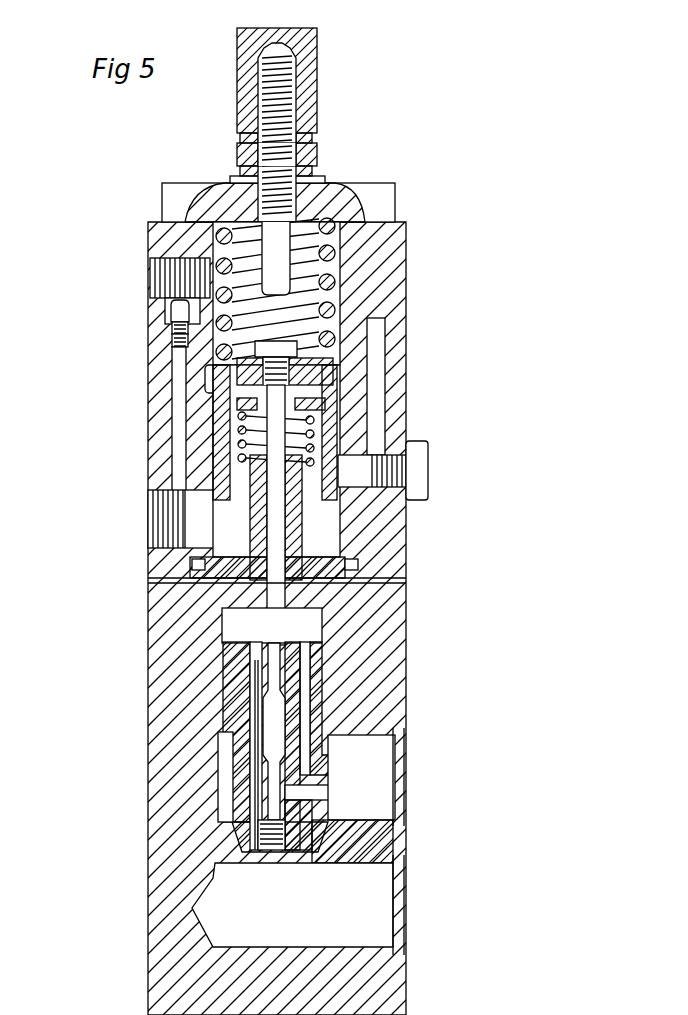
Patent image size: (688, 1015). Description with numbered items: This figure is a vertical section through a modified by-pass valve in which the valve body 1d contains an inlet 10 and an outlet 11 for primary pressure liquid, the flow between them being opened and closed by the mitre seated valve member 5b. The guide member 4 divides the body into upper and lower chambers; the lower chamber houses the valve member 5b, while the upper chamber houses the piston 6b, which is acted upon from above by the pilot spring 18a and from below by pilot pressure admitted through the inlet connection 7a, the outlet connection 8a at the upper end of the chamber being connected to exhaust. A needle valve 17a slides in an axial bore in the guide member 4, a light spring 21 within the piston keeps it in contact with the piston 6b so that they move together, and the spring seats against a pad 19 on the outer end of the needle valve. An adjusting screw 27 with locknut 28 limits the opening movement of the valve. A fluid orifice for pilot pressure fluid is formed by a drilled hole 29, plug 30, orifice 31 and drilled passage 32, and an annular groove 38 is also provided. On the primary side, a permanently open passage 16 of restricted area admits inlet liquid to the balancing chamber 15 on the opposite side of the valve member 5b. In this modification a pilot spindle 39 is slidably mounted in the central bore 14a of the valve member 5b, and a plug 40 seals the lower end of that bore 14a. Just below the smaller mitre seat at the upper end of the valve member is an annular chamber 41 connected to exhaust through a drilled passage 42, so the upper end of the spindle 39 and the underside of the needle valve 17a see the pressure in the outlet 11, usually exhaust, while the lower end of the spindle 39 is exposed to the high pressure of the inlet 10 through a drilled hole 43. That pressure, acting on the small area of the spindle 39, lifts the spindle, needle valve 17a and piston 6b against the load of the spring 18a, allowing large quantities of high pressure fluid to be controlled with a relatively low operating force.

The valve body 1d is at (157, 742).
The guide member 4 is at (192, 575).
The mitre seated valve member 5b is at (262, 690).
The piston 6b is at (345, 433).
The inlet connection 7a is at (163, 512).
The outlet connection 8a is at (162, 275).
The inlet 10 is at (372, 757).
The outlet 11 is at (370, 902).
The central bore 14a is at (320, 810).
The balancing chamber 15 is at (312, 622).
The permanently open passage 16 is at (228, 793).
The needle valve 17a is at (268, 620).
The pilot spring 18a is at (334, 253).
The pad 19 is at (338, 396).
The light spring 21 is at (213, 470).
The adjusting screw 27 is at (297, 118).
The locknut 28 is at (318, 84).
The drilled hole 29 is at (178, 312).
The plug 30 is at (172, 337).
The orifice 31 is at (172, 347).
The drilled passage 32 is at (178, 432).
The annular groove 38 is at (212, 387).
The pilot spindle 39 is at (272, 735).
The plug 40 is at (250, 833).
The annular chamber 41 is at (302, 655).
The drilled passage 42 is at (240, 826).
The drilled hole 43 is at (320, 784).